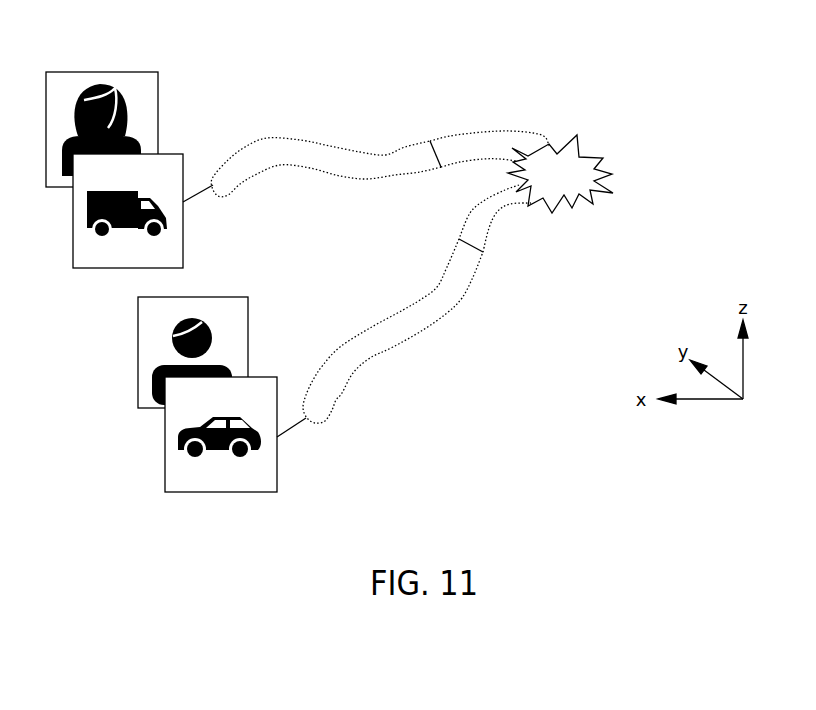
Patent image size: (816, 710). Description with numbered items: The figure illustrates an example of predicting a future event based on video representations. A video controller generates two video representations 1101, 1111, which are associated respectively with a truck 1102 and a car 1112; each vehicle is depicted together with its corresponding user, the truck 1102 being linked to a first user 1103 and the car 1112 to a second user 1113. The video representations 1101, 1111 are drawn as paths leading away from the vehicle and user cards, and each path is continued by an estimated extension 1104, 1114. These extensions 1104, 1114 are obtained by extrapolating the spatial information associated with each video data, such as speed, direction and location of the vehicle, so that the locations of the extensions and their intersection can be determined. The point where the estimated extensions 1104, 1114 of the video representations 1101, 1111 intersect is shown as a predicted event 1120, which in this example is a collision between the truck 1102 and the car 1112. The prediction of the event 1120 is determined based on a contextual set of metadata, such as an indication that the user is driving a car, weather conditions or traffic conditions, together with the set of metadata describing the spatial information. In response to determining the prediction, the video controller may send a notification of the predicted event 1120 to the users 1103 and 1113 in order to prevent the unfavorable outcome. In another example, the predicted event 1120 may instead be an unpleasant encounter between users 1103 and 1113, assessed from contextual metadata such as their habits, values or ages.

The video representation 1101 is at (300, 140).
The truck 1102 is at (118, 268).
The user 1103 is at (98, 72).
The estimated extension 1104 is at (473, 137).
The video representation 1111 is at (403, 308).
The car 1112 is at (207, 492).
The user 1113 is at (202, 297).
The estimated extension 1114 is at (488, 228).
The event 1120 is at (585, 158).